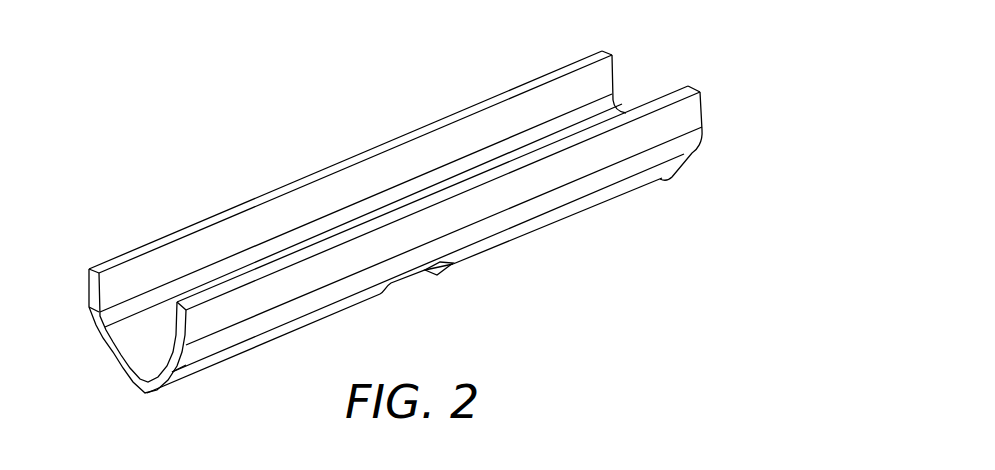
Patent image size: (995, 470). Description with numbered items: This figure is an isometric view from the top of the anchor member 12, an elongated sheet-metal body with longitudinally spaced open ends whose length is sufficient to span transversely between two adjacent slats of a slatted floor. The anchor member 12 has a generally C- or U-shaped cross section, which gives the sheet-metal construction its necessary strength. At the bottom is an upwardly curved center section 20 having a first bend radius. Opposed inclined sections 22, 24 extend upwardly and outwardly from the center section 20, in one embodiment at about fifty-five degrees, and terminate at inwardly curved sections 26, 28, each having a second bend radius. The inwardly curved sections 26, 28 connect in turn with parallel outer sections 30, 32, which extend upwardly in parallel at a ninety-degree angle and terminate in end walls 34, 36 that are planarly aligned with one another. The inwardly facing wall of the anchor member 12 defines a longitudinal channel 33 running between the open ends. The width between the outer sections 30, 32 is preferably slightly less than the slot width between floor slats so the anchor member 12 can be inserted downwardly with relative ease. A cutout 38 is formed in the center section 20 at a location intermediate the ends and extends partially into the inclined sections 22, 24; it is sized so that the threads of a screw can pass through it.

The anchor member 12 is at (616, 232).
The curved center section 20 is at (131, 385).
The inclined section 22 is at (131, 352).
The inclined section 24 is at (201, 364).
The inwardly curved section 26 is at (115, 322).
The inwardly curved section 28 is at (255, 326).
The outer section 30 is at (302, 208).
The outer section 32 is at (642, 137).
The longitudinal channel 33 is at (633, 90).
The end wall 34 is at (404, 137).
The end wall 36 is at (679, 95).
The cutout 38 is at (415, 283).